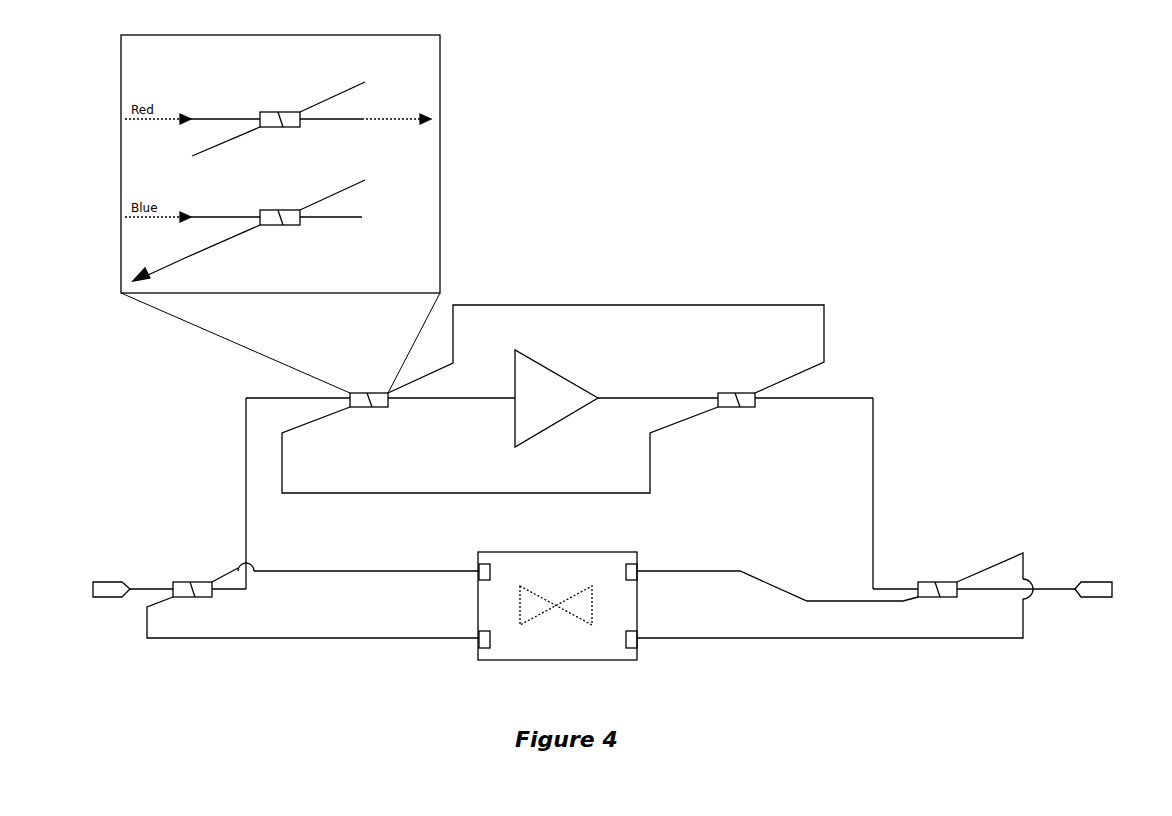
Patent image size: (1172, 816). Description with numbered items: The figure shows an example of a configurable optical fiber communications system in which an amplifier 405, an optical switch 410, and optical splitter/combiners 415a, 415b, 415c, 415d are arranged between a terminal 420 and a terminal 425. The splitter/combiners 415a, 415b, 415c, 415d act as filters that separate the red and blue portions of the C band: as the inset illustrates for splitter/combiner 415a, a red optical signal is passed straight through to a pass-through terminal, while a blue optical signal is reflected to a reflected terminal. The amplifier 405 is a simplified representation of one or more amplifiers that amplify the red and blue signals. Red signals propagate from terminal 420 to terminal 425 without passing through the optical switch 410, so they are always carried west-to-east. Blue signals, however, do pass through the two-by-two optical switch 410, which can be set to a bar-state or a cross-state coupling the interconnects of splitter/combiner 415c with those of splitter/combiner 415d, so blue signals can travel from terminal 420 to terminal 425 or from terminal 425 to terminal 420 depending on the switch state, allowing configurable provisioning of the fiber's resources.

The amplifier 405 is at (557, 373).
The optical switch 410 is at (592, 552).
The optical splitter/combiner 415a is at (353, 393).
The optical splitter/combiner 415b is at (722, 393).
The optical splitter/combiner 415c is at (178, 582).
The optical splitter/combiner 415d is at (922, 582).
The terminal 420 is at (112, 580).
The terminal 425 is at (1093, 581).